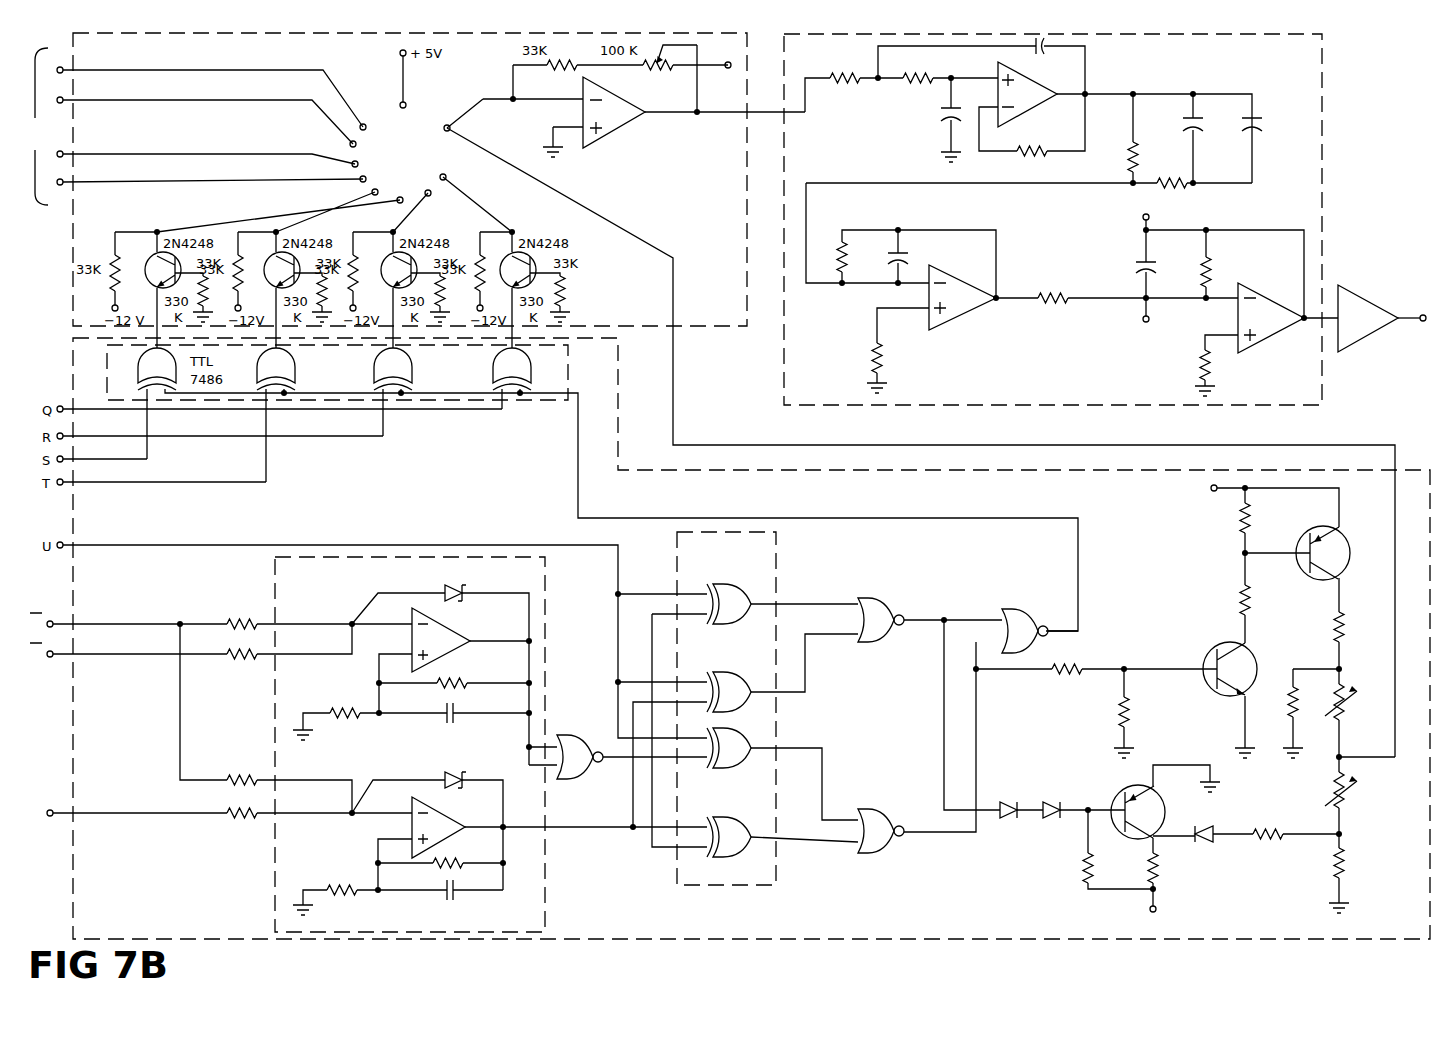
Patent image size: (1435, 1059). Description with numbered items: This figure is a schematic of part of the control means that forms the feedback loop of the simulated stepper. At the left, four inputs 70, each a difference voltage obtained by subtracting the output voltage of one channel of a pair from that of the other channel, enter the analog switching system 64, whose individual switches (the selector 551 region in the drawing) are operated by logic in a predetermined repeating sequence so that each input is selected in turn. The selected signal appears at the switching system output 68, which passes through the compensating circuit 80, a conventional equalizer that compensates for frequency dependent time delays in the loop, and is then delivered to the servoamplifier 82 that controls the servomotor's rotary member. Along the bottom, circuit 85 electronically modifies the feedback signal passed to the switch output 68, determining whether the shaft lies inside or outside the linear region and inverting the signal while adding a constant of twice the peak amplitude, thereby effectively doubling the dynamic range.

The inputs 70 is at (196, 126).
The selector switch 551 is at (334, 165).
The switching system output 68 is at (766, 117).
The analog switching system 64 is at (695, 327).
The compensating circuit 80 is at (1322, 370).
The servoamplifier 82 is at (1363, 288).
The circuit 85 is at (1318, 940).